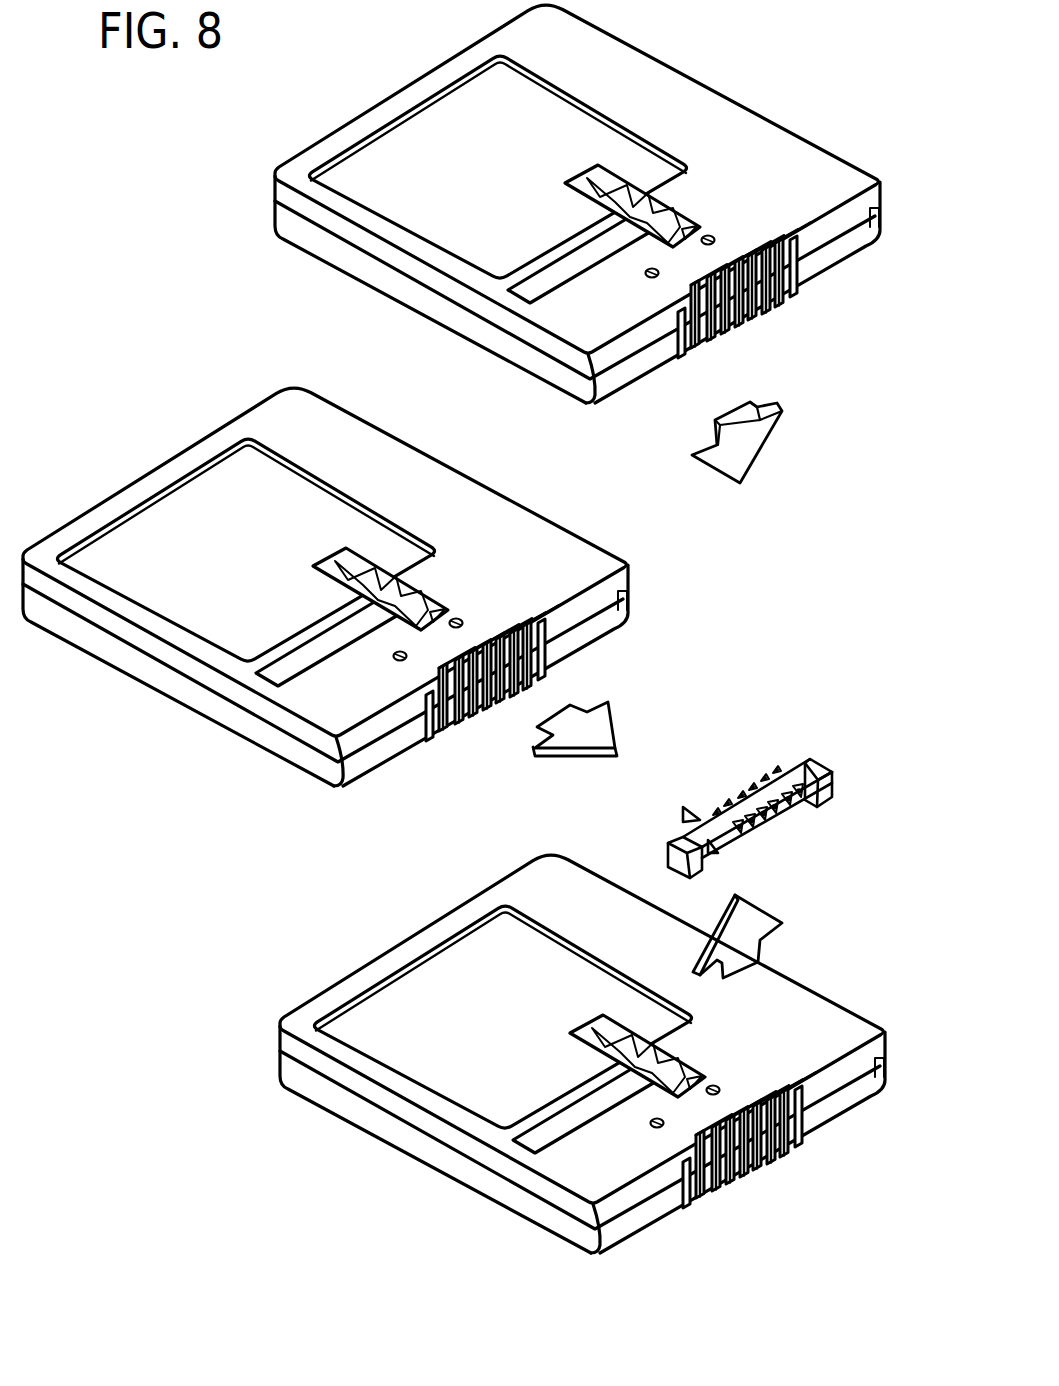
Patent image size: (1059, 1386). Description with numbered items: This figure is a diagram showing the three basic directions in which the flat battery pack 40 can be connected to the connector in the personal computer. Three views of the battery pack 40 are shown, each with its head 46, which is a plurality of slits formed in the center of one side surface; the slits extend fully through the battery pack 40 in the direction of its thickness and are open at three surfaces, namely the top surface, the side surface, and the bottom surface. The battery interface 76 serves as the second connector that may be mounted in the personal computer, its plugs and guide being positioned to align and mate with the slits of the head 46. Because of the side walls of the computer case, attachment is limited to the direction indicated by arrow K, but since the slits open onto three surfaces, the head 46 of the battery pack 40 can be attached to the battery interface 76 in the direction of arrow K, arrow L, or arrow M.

The battery pack 40 is at (766, 147).
The head 46 is at (759, 316).
The battery interface 76 is at (792, 772).
The arrow K is at (757, 457).
The arrow L is at (613, 728).
The arrow M is at (762, 910).